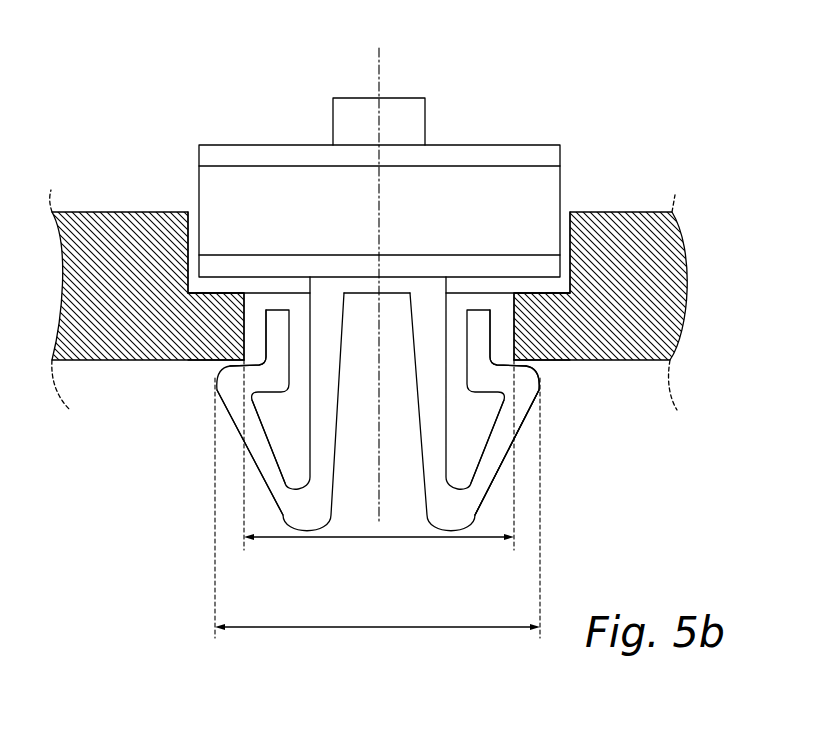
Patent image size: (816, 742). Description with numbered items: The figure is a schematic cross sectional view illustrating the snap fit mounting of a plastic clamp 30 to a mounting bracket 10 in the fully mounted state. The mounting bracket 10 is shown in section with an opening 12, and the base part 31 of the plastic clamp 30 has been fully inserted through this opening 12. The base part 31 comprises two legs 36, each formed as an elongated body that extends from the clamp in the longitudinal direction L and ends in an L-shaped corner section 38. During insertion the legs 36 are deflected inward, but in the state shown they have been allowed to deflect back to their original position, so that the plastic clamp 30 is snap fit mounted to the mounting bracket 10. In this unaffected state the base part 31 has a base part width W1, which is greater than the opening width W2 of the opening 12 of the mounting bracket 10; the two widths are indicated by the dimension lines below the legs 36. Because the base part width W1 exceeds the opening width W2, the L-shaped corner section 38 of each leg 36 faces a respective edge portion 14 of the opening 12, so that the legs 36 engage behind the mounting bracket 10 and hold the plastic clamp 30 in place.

The mounting bracket 10 is at (106, 184).
The opening 12 is at (246, 304).
The edge portion 14 is at (224, 376).
The plastic clamp 30 is at (411, 320).
The base part 31 is at (570, 401).
The leg 36 is at (322, 467).
The L-shaped corner section 38 is at (241, 343).
The longitudinal direction L is at (397, 72).
The base part width W1 is at (377, 518).
The opening width W2 is at (379, 465).